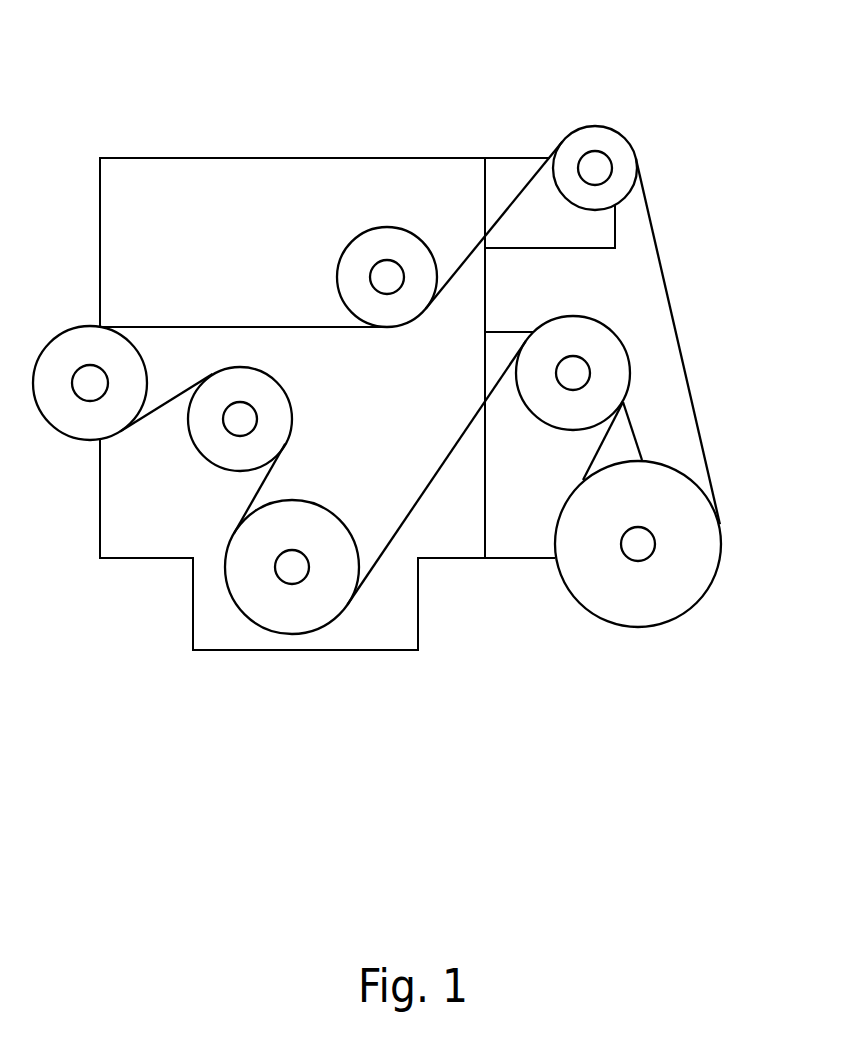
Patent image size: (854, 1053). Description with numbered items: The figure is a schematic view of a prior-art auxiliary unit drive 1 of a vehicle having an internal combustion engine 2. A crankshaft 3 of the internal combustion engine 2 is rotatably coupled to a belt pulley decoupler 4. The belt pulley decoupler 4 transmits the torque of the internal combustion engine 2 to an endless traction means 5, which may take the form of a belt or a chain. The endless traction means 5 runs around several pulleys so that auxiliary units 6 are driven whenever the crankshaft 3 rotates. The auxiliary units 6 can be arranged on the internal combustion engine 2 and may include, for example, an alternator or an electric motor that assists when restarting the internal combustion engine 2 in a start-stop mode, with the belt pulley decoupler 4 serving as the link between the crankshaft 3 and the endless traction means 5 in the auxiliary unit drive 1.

The auxiliary unit drive 1 is at (577, 100).
The internal combustion engine 2 is at (180, 175).
The crankshaft 3 is at (290, 567).
The belt pulley decoupler 4 is at (293, 618).
The endless traction means 5 is at (130, 327).
The auxiliary units 6 is at (677, 580).